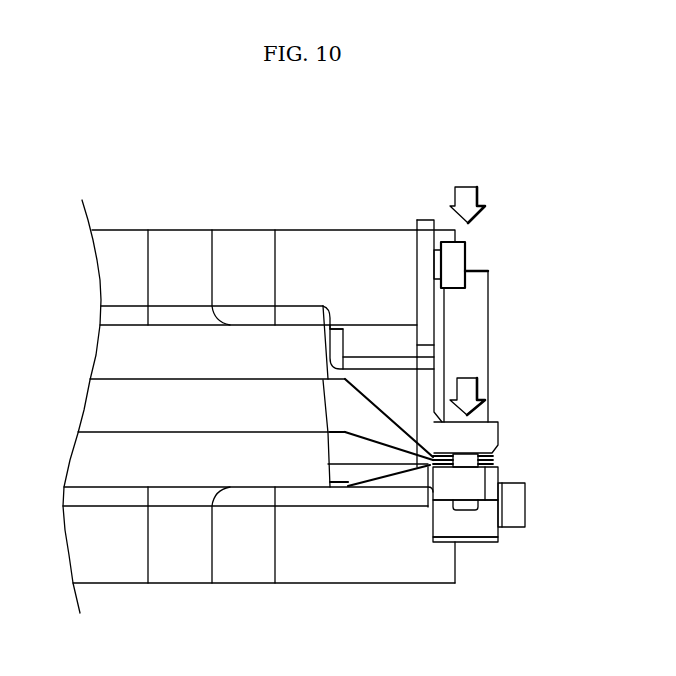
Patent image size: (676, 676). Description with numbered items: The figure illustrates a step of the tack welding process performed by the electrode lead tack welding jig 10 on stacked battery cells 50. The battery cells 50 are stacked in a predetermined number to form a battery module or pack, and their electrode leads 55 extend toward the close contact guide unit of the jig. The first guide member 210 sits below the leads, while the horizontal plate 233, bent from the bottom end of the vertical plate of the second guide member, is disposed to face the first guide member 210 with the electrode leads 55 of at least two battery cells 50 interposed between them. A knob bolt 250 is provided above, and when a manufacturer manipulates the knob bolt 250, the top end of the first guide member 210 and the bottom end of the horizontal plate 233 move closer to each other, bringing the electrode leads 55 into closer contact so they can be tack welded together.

The electrode lead tack welding jig 10 is at (152, 169).
The battery cell 50 is at (78, 369).
The knob bolt 250 is at (480, 302).
The horizontal plate 233 is at (495, 432).
The electrode lead 55 is at (490, 457).
The first guide member 210 is at (495, 477).